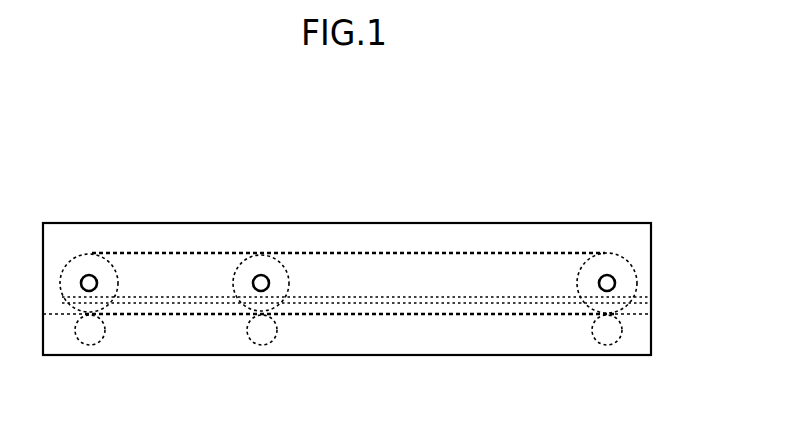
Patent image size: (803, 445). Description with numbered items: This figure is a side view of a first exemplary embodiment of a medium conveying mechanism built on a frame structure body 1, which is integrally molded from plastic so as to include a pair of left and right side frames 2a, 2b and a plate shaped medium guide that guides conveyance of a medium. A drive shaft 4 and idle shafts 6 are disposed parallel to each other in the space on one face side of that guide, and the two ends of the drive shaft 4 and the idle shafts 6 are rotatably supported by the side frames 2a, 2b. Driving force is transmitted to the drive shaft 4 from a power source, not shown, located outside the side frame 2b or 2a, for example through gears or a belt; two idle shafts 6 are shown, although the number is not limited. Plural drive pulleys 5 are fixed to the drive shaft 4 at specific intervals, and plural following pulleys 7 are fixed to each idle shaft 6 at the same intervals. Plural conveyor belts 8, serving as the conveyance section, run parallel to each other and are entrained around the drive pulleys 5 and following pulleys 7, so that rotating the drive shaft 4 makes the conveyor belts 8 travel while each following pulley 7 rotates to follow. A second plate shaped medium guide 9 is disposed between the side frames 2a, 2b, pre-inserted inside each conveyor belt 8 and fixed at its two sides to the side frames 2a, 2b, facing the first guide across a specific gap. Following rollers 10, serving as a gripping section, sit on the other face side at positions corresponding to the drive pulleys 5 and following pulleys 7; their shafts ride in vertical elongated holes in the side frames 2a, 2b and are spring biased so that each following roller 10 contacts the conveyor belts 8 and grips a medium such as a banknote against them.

The frame structure body 1 is at (376, 273).
The side frame 2a is at (347, 322).
The side frame 2b is at (352, 333).
The drive shaft 4 is at (89, 274).
The drive pulleys 5 is at (65, 268).
The idle shafts 6 is at (261, 274).
The following pulleys 7 is at (233, 272).
The conveyor belts 8 is at (405, 251).
The medium guide 9 is at (651, 298).
The following rollers 10 is at (90, 345).